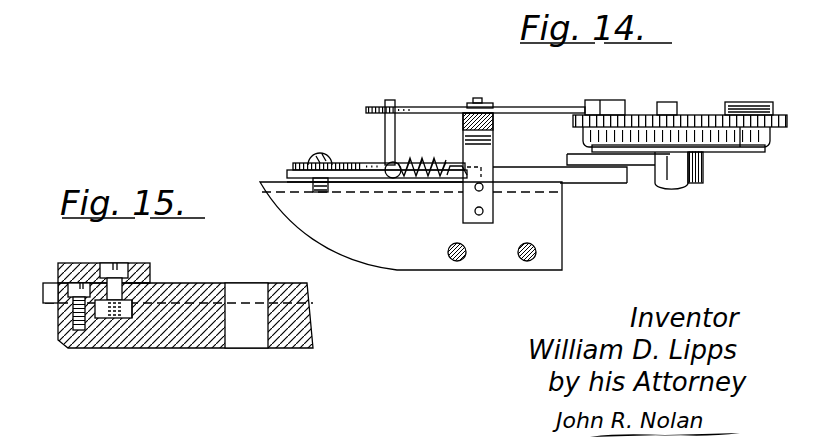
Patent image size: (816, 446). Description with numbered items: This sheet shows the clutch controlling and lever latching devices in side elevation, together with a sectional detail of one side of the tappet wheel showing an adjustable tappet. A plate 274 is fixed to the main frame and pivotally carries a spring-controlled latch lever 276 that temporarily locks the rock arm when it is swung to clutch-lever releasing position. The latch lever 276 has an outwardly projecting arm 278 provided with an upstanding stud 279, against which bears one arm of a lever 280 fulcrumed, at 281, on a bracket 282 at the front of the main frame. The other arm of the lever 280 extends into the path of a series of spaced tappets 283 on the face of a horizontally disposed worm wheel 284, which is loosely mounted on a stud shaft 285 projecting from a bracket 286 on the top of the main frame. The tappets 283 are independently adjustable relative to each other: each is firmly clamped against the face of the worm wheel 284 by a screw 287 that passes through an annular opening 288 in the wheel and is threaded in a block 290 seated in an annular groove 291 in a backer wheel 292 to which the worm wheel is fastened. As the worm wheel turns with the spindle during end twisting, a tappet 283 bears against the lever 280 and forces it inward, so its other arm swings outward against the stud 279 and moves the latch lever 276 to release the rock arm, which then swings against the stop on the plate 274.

In FIG. 14, the plate 274 is at (363, 185).
In FIG. 14, the latch lever 276 is at (346, 155).
In FIG. 14, the outwardly projecting arm 278 is at (437, 173).
In FIG. 14, the upstanding stud 279 is at (393, 102).
In FIG. 14, the lever 280 is at (366, 116).
In FIG. 14, the fulcrum 281 is at (483, 90).
In FIG. 14, the bracket 282 is at (483, 147).
In FIG. 14, the tappets 283 is at (618, 93).
In FIG. 15, the tappets 283 is at (69, 257).
In FIG. 15, the worm wheel 284 is at (47, 300).
In FIG. 14, the stud shaft 285 is at (680, 186).
In FIG. 14, the bracket 286 is at (703, 183).
In FIG. 15, the screw 287 is at (122, 268).
In FIG. 15, the annular opening 288 is at (125, 295).
In FIG. 15, the block 290 is at (133, 320).
In FIG. 14, the annular groove 291 is at (720, 142).
In FIG. 15, the annular groove 291 is at (107, 318).
In FIG. 15, the backer wheel 292 is at (292, 340).